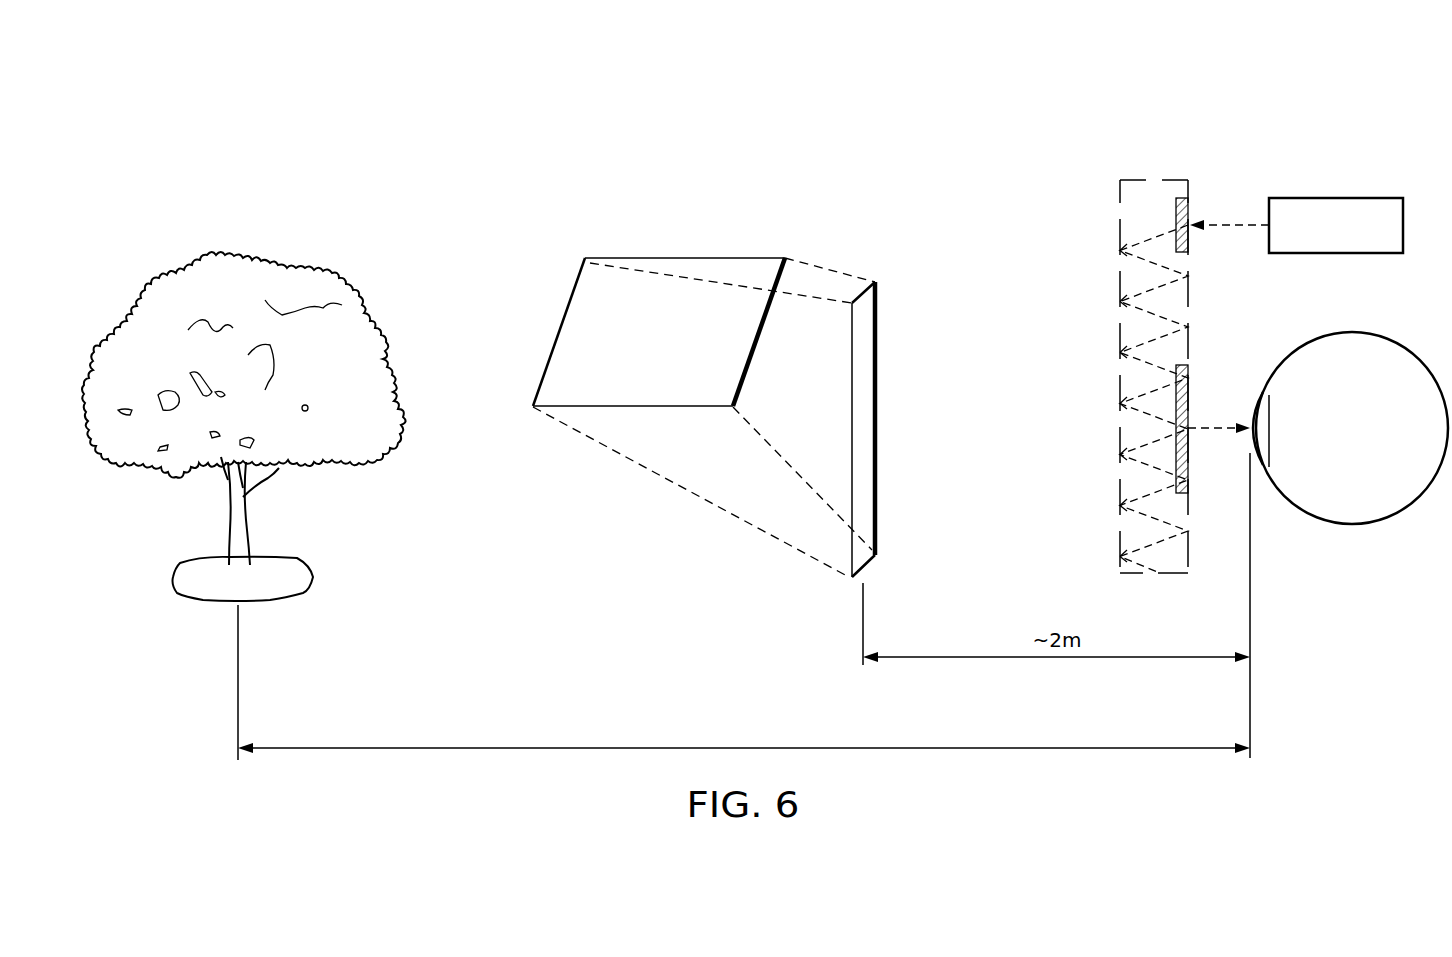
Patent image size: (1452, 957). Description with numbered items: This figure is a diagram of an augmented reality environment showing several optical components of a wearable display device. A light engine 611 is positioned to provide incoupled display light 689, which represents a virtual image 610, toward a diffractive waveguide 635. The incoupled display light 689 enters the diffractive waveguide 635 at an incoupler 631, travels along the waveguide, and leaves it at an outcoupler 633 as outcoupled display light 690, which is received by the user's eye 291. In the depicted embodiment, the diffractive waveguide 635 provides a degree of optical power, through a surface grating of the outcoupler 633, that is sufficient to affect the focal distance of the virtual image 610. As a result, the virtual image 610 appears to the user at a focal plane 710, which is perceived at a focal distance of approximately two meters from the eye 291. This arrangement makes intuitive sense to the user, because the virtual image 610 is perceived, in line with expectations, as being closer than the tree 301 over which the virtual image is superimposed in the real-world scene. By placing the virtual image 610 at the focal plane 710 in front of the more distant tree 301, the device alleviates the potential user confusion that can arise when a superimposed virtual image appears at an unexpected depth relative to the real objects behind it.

The tree 301 is at (167, 283).
The virtual image 610 is at (673, 258).
The focal plane 710 is at (877, 430).
The diffractive waveguide 635 is at (1175, 181).
The incoupler 631 is at (1176, 220).
The outcoupler 633 is at (1176, 455).
The incoupled display light 689 is at (1222, 224).
The outcoupled display light 690 is at (1218, 427).
The light engine 611 is at (1335, 198).
The user's eye 291 is at (1352, 524).